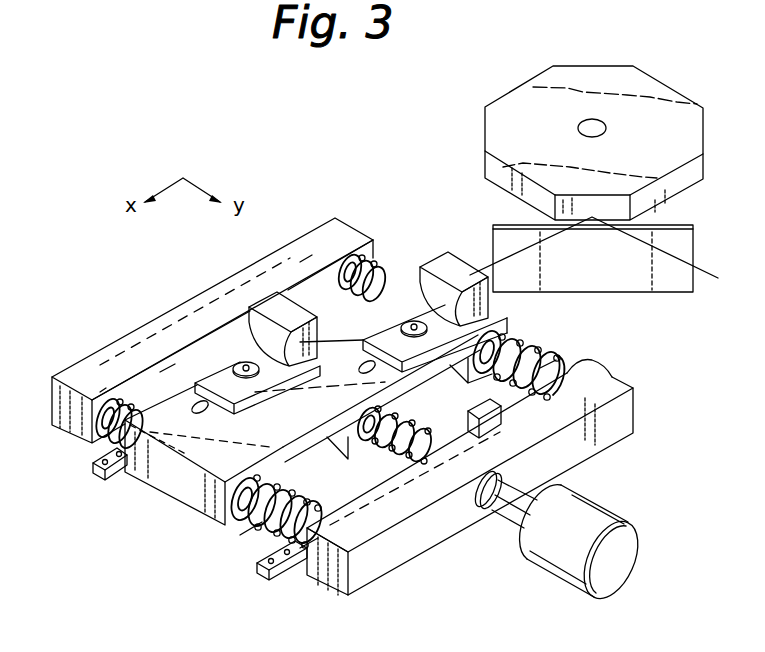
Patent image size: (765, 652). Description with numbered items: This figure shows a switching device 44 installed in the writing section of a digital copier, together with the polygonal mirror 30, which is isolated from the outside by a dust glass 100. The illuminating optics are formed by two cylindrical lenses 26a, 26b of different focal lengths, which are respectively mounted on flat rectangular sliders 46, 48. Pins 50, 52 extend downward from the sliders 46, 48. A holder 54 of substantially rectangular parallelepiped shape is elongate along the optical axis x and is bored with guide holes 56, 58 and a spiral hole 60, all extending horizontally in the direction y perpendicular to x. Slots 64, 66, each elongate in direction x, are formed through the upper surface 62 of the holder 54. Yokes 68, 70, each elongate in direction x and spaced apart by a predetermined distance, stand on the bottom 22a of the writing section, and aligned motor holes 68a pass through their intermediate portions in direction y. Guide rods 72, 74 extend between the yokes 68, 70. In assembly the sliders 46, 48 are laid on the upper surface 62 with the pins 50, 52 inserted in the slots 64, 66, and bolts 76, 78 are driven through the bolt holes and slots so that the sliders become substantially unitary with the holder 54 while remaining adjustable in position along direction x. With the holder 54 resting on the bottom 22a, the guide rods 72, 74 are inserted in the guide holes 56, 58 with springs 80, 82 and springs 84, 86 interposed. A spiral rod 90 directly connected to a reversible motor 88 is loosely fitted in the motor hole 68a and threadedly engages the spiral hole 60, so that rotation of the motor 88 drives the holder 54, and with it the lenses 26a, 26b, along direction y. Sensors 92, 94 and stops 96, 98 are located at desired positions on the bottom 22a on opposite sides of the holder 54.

The switching device 44 is at (262, 153).
The polygonal mirror 30 is at (497, 128).
The dust glass 100 is at (676, 278).
The yoke 70 is at (336, 218).
The spring 82 is at (101, 396).
The slot 66 is at (134, 390).
The pin 52 is at (167, 373).
The stop 96 is at (303, 262).
The spring 86 is at (377, 260).
The slot 64 is at (355, 372).
The holder 54 is at (197, 490).
The upper surface 62 is at (183, 430).
The guide hole 56 is at (227, 520).
The guide rod 72 is at (253, 523).
The spring 80 is at (312, 542).
The sensor 92 is at (93, 473).
The sensor 94 is at (288, 563).
The slider 48 is at (192, 400).
The bolt 78 is at (246, 362).
The cylindrical lens 26b is at (282, 303).
The pin 50 is at (360, 363).
The slider 46 is at (508, 318).
The bolt 76 is at (413, 323).
The cylindrical lens 26a is at (458, 260).
The guide hole 58 is at (527, 347).
The guide rod 74 is at (550, 367).
The spiral hole 60 is at (362, 437).
The stop 98 is at (477, 405).
The yoke 68 is at (618, 420).
The bottom 22a is at (430, 558).
The spring 84 is at (613, 382).
The motor hole 68a is at (490, 517).
The spiral rod 90 is at (518, 517).
The reversible motor 88 is at (573, 560).